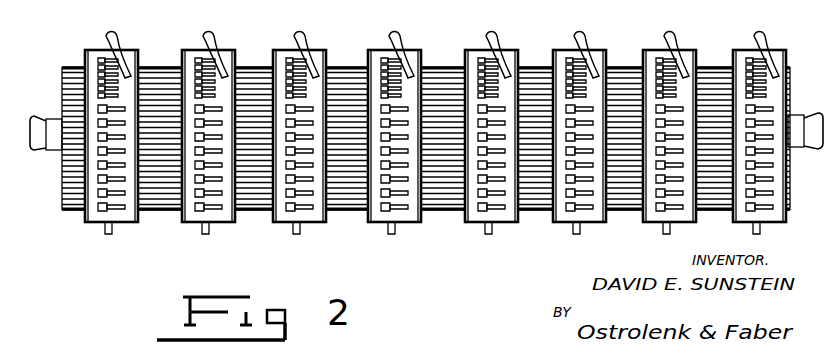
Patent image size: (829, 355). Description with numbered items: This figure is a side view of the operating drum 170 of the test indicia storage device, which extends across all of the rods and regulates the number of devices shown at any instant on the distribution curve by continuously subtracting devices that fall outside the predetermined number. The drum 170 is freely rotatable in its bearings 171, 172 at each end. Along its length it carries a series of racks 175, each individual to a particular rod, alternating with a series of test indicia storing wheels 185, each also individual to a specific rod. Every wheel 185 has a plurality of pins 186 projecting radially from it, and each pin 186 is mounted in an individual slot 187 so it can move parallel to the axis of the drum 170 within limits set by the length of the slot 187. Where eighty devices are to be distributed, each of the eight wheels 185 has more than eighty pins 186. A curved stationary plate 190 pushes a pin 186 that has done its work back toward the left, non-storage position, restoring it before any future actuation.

The drum 170 is at (628, 45).
The bearing 171 is at (62, 148).
The bearing 172 is at (800, 150).
The rack 175 is at (75, 66).
The test indicia storing wheel 185 is at (133, 212).
The pin 186 is at (227, 143).
The slot 187 is at (222, 128).
The curved stationary plate 190 is at (113, 33).